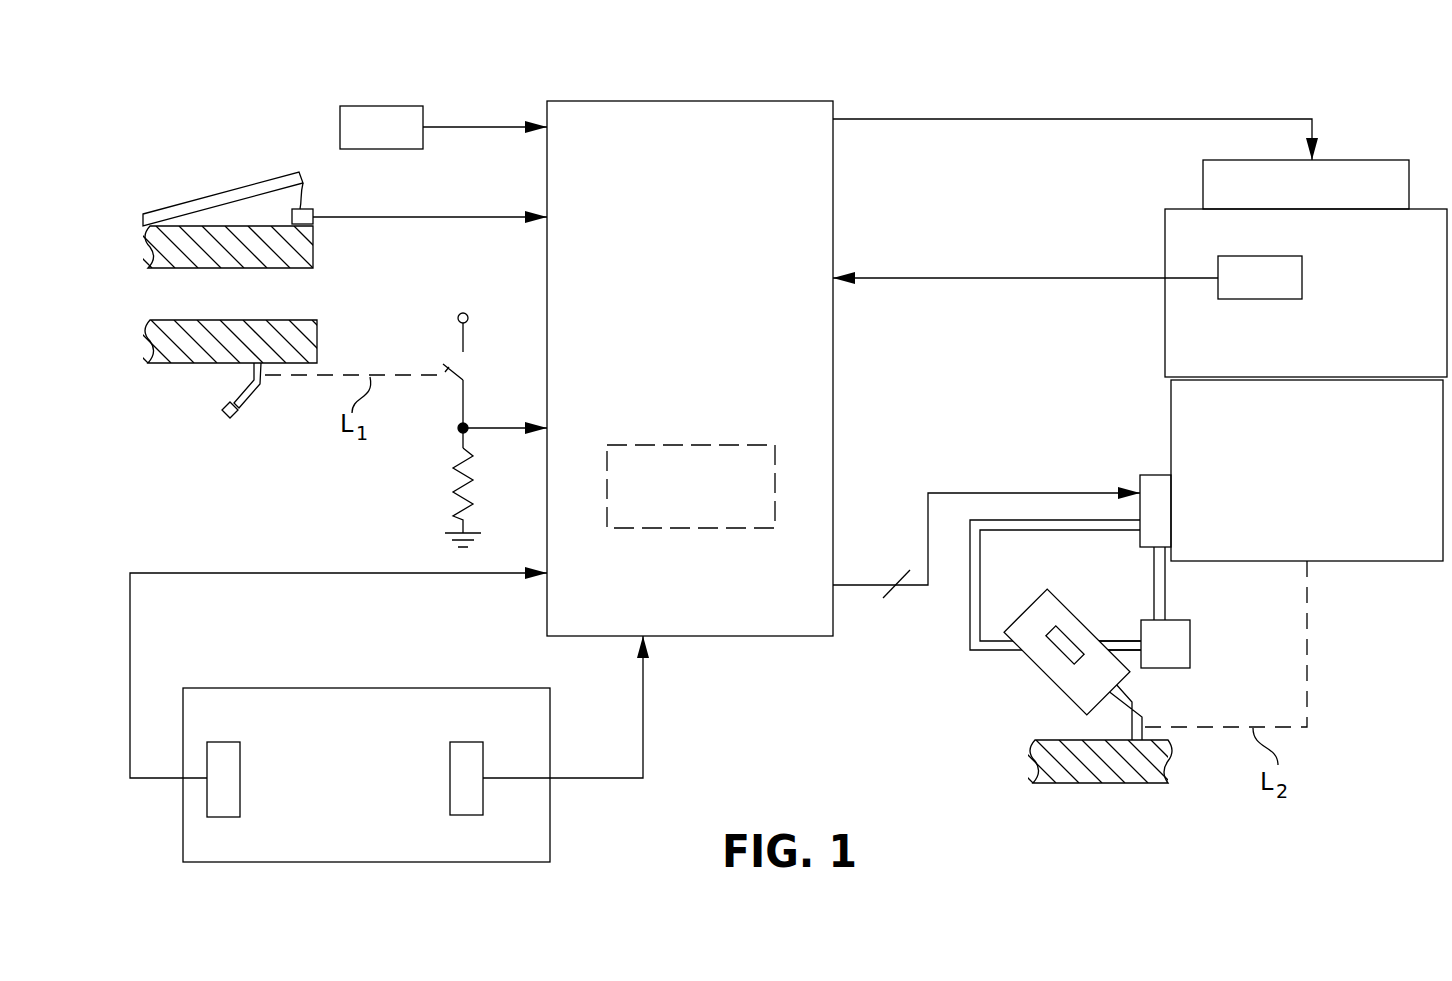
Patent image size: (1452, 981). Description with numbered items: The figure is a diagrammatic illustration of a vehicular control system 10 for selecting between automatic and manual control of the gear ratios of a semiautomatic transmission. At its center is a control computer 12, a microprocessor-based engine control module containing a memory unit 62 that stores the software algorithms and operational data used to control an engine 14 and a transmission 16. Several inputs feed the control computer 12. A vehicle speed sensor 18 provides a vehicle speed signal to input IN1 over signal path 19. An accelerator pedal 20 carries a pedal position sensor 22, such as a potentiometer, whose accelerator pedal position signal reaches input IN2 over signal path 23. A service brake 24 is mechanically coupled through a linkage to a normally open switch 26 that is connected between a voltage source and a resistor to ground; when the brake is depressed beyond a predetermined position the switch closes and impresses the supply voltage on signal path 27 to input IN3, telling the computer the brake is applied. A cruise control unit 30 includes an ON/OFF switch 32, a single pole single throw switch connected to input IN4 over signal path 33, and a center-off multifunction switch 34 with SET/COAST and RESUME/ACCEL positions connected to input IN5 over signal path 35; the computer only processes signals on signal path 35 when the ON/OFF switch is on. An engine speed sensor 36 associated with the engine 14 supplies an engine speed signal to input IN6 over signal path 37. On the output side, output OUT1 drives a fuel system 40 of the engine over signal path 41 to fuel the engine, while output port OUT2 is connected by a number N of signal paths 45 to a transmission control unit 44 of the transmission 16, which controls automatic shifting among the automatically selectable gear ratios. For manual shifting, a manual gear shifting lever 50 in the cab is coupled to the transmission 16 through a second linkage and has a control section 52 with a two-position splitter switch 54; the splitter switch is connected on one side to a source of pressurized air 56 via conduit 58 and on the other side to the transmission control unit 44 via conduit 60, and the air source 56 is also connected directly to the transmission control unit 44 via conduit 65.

The vehicular control system 10 is at (993, 107).
The control computer 12 is at (687, 101).
The engine 14 is at (1163, 238).
The transmission 16 is at (1388, 563).
The vehicle speed sensor 18 is at (383, 105).
The signal path 19 is at (467, 120).
The accelerator pedal 20 is at (242, 180).
The pedal position sensor 22 is at (315, 212).
The signal path 23 is at (460, 217).
The service brake 24 is at (253, 395).
The switch 26 is at (463, 368).
The signal path 27 is at (495, 432).
The cruise control unit 30 is at (417, 688).
The ON/OFF switch 32 is at (240, 755).
The signal path 33 is at (130, 655).
The multifunction switch 34 is at (450, 787).
The signal path 35 is at (577, 773).
The engine speed sensor 36 is at (1302, 283).
The signal path 37 is at (1005, 277).
The fuel system 40 is at (1358, 160).
The signal path 41 is at (1162, 118).
The transmission control unit 44 is at (1157, 475).
The signal paths 45 is at (1017, 492).
The manual gear shifting lever 50 is at (1140, 713).
The control section 52 is at (1063, 692).
The splitter switch 54 is at (1060, 660).
The source of pressurized air 56 is at (1190, 645).
The conduit 58 is at (1127, 640).
The conduit 60 is at (982, 578).
The memory unit 62 is at (690, 445).
The conduit 65 is at (1167, 587).